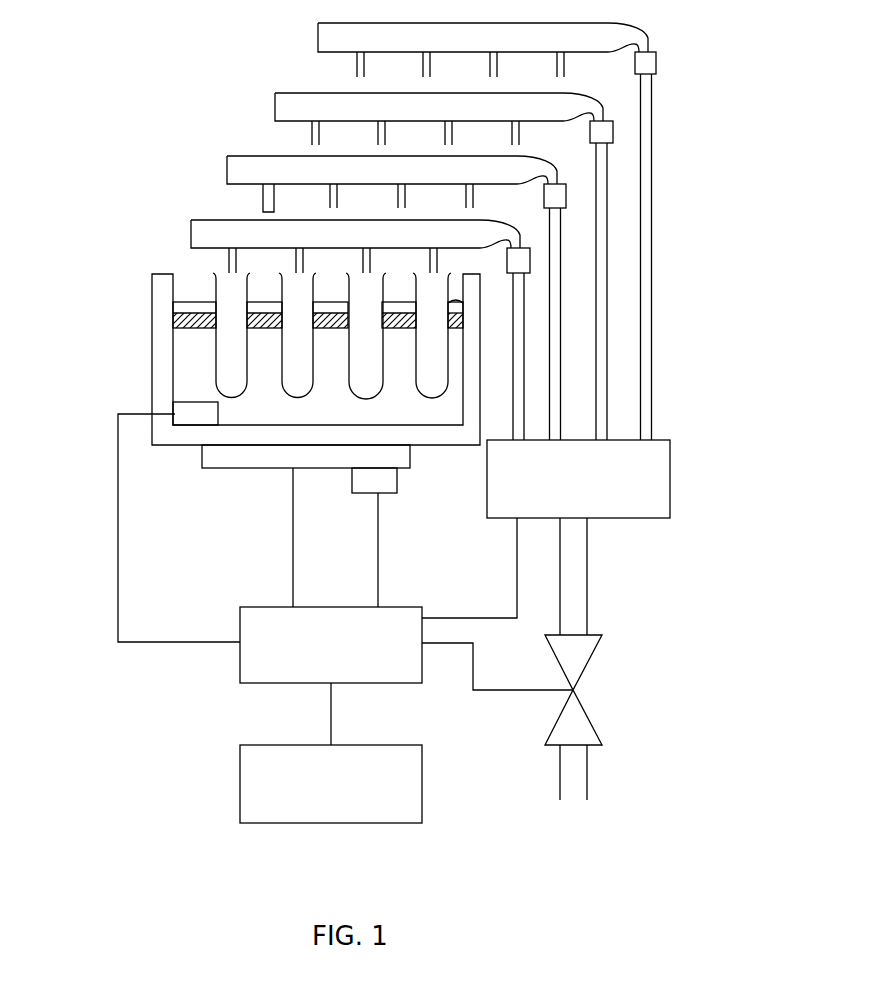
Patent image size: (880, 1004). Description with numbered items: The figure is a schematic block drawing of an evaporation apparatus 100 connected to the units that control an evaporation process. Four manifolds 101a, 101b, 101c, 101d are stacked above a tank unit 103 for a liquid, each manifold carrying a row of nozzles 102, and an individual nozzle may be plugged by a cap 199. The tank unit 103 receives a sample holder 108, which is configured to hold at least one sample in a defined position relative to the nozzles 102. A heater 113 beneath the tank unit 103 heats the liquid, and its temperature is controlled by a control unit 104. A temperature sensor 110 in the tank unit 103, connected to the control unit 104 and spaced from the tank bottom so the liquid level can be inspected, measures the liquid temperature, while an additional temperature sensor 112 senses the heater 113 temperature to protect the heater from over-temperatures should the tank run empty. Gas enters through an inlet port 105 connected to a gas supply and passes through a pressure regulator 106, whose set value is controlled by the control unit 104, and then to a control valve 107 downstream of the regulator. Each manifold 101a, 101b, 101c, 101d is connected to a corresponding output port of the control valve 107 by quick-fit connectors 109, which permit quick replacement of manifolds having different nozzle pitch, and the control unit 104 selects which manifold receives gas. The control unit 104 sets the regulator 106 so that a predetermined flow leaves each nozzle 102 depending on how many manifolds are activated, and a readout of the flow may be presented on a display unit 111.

The evaporation apparatus 100 is at (118, 107).
The manifold 101a is at (182, 239).
The manifold 101b is at (224, 180).
The manifold 101c is at (270, 110).
The manifold 101d is at (318, 42).
The nozzle 102 is at (228, 268).
The tank unit 103 is at (150, 340).
The control unit 104 is at (406, 631).
The inlet port 105 is at (573, 810).
The pressure regulator 106 is at (598, 724).
The control valve 107 is at (578, 537).
The sample holder 108 is at (173, 320).
The quick-fit connector 109 is at (657, 57).
The temperature sensor 110 is at (187, 413).
The display unit 111 is at (331, 784).
The additional temperature sensor 112 is at (360, 495).
The heater 113 is at (243, 471).
The cap 199 is at (260, 210).